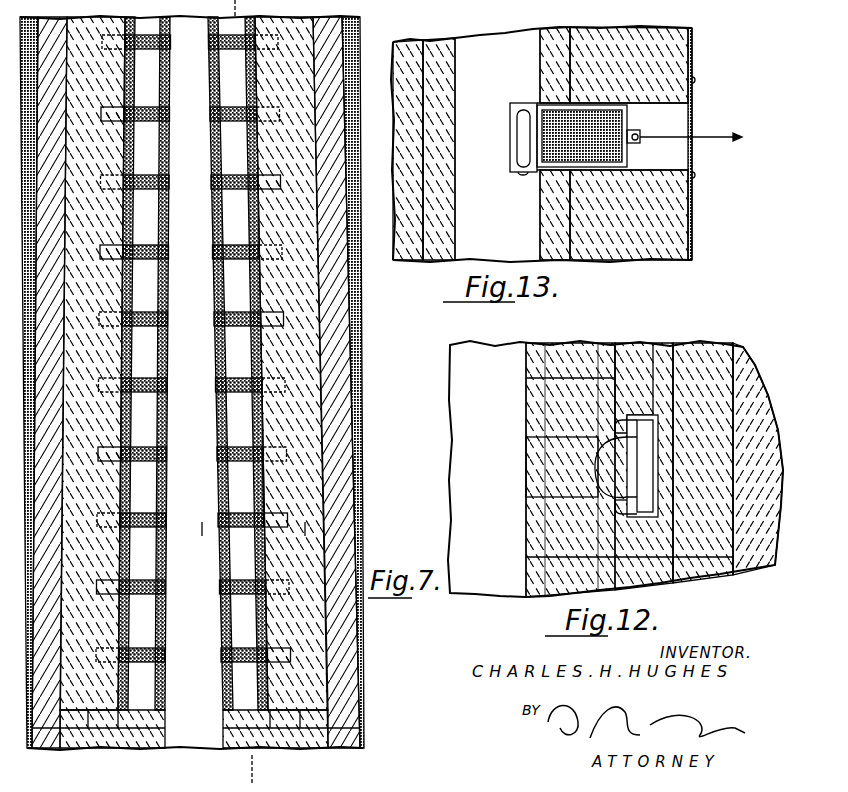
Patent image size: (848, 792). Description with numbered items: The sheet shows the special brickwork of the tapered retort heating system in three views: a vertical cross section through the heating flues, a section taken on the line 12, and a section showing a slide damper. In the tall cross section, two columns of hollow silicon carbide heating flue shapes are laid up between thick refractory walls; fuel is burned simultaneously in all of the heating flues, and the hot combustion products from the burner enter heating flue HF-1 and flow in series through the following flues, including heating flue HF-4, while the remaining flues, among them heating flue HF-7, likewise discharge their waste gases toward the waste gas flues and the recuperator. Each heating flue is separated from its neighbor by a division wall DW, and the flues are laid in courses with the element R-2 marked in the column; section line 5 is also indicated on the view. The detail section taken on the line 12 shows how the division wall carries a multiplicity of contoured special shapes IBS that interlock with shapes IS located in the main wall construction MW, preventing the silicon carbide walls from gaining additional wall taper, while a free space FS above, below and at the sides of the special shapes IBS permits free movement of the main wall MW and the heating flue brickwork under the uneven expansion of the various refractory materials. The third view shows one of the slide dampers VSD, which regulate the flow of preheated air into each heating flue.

In FIG. 7, the heating flue HF-7 is at (233, 291).
In FIG. 7, the reinforcing member R-2 is at (218, 383).
In FIG. 7, the heating flue HF-4 is at (283, 485).
In FIG. 7, the heating flue HF-1 is at (243, 688).
In FIG. 7, the division wall DW is at (227, 445).
In FIG. 7, the main wall construction MW is at (282, 482).
In FIG. 12, the main wall construction MW is at (412, 419).
In FIG. 7, the free space FS is at (284, 485).
In FIG. 12, the free space FS is at (650, 415).
In FIG. 7, the special shapes IBS is at (282, 513).
In FIG. 12, the special shapes IBS is at (573, 470).
In FIG. 12, the shapes IS is at (612, 427).
In FIG. 13, the slide damper VSD is at (588, 136).
In FIG. 7, the section line 5- 5 is at (235, 5).
In FIG. 7, the section line 12- 12 is at (259, 536).